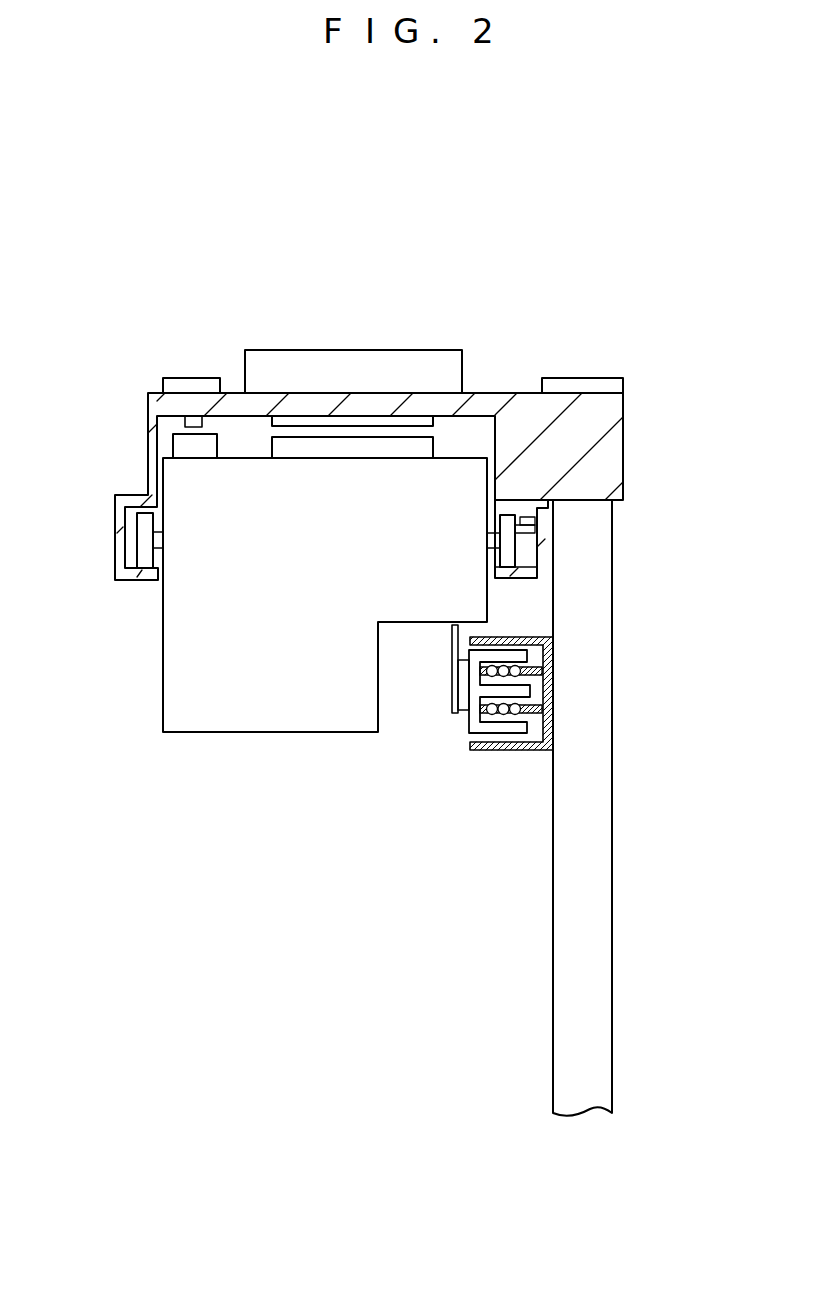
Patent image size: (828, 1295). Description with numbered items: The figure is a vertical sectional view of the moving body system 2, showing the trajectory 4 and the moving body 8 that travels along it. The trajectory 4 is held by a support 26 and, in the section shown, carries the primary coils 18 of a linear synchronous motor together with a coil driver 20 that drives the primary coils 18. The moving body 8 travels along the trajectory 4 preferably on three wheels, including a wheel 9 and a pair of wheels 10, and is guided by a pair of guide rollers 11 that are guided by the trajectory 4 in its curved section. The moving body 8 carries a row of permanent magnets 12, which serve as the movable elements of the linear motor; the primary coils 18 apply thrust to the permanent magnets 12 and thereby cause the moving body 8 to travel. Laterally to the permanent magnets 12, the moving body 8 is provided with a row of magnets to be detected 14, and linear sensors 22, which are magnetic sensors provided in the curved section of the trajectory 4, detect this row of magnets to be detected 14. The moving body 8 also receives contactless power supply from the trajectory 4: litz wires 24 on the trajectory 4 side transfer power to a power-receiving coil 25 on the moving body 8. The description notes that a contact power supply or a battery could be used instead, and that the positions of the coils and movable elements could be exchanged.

The moving body system 2 is at (304, 1141).
The trajectory 4 is at (510, 383).
The moving body 8 is at (259, 740).
The wheel 9 is at (143, 550).
The wheels 10 is at (505, 553).
The guide rollers 11 is at (533, 522).
The row of permanent magnets 12 is at (358, 452).
The row of magnets to be detected 14 is at (200, 452).
The primary coils 18 is at (306, 420).
The coil driver 20 is at (366, 366).
The linear sensors 22 is at (193, 422).
The litz wires 24 is at (491, 669).
The power-receiving coil 25 is at (476, 688).
The support 26 is at (595, 783).